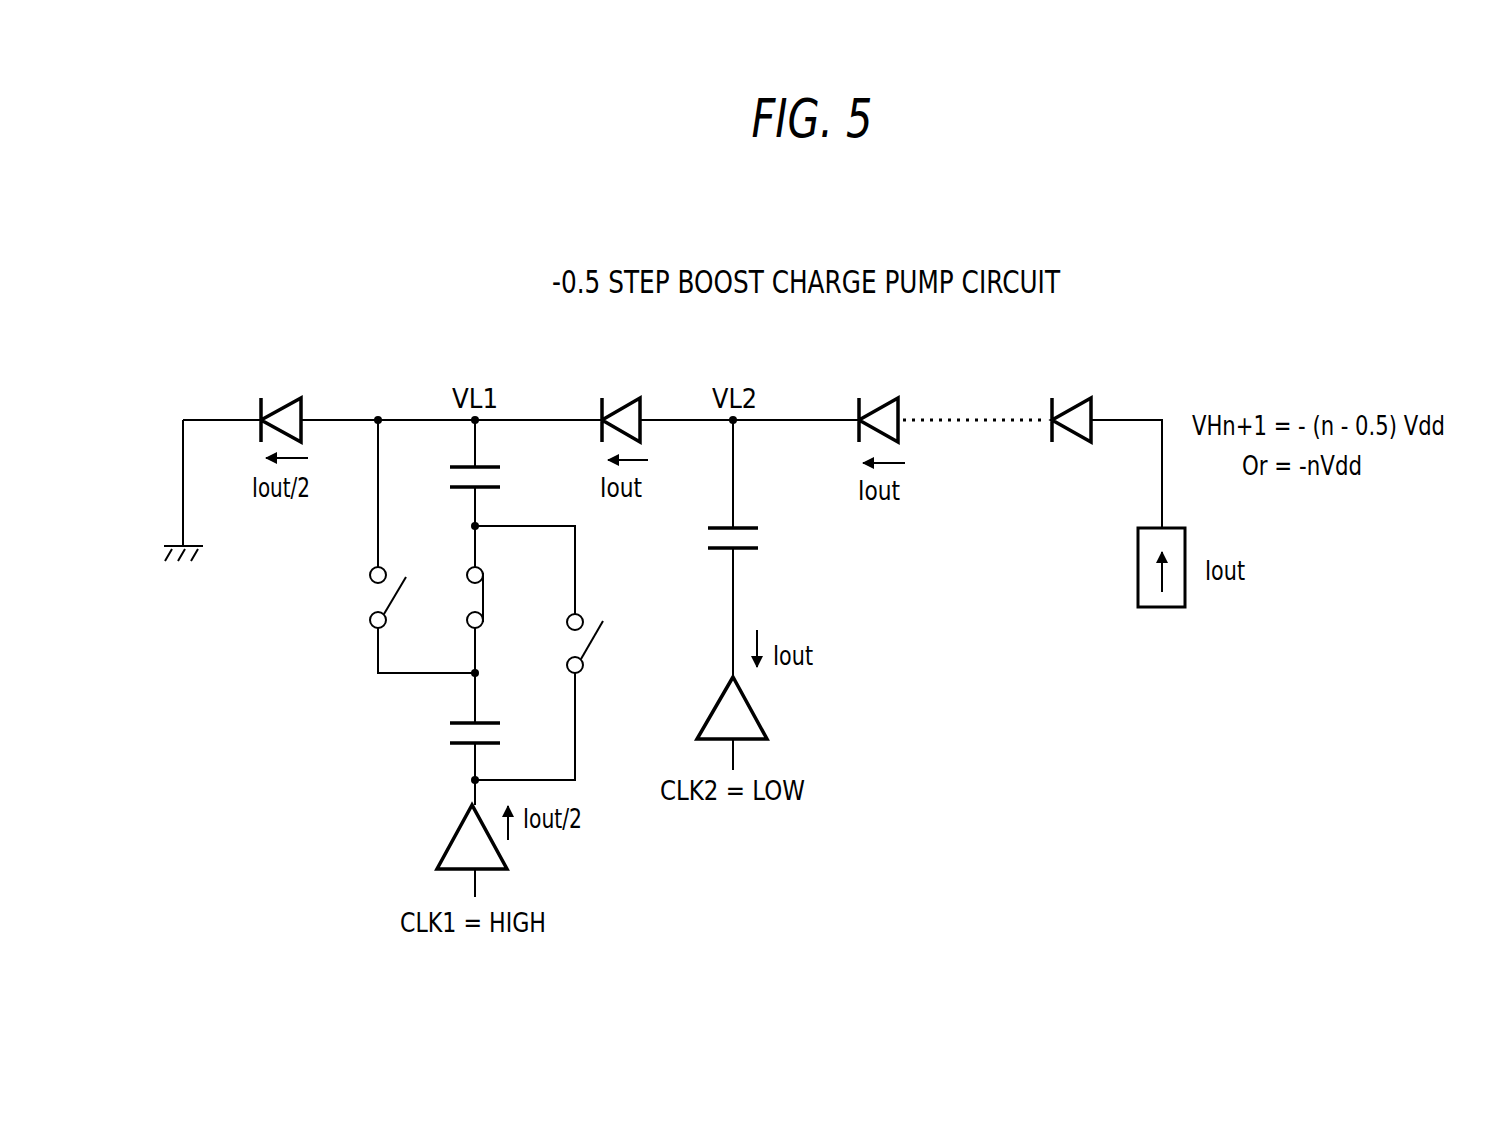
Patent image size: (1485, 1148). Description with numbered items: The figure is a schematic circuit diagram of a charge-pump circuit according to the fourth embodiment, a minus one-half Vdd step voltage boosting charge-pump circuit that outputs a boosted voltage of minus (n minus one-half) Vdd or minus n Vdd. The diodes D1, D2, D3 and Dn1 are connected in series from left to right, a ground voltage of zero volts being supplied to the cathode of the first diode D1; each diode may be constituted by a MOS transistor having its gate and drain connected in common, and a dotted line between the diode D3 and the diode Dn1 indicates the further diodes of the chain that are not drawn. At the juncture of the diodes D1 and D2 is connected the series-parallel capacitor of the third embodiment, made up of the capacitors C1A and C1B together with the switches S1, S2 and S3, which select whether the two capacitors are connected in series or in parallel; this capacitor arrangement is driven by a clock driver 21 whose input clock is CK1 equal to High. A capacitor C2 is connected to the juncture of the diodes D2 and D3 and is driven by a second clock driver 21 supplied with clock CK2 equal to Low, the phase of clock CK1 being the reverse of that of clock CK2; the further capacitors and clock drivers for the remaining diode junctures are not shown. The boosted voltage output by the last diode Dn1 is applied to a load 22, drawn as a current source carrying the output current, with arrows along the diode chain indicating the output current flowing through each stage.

The clock driver 21 is at (502, 855).
The load 22 is at (1138, 568).
The capacitor C1A is at (500, 479).
The capacitor C1B is at (447, 734).
The capacitor C2 is at (752, 539).
The switch S1 is at (371, 597).
The switch S2 is at (496, 597).
The switch S3 is at (601, 643).
The diode D1 is at (290, 397).
The diode D2 is at (632, 398).
The diode D3 is at (888, 400).
The diode Dn1 is at (1082, 400).